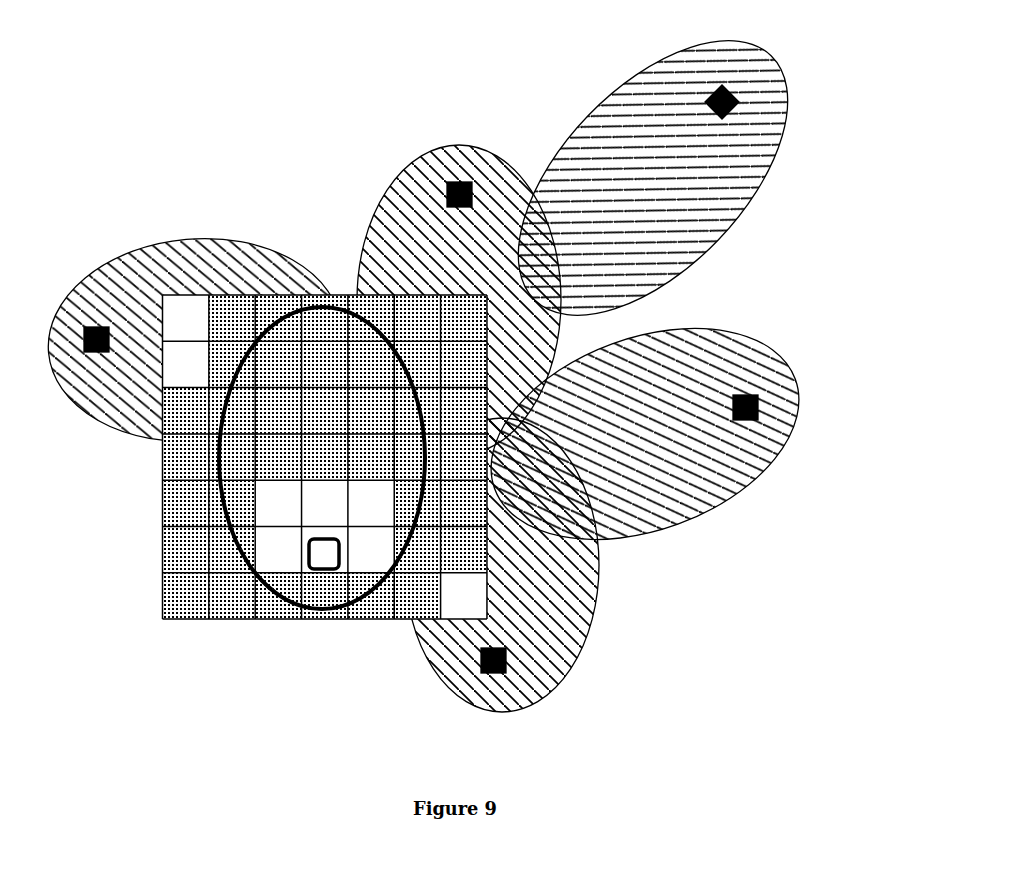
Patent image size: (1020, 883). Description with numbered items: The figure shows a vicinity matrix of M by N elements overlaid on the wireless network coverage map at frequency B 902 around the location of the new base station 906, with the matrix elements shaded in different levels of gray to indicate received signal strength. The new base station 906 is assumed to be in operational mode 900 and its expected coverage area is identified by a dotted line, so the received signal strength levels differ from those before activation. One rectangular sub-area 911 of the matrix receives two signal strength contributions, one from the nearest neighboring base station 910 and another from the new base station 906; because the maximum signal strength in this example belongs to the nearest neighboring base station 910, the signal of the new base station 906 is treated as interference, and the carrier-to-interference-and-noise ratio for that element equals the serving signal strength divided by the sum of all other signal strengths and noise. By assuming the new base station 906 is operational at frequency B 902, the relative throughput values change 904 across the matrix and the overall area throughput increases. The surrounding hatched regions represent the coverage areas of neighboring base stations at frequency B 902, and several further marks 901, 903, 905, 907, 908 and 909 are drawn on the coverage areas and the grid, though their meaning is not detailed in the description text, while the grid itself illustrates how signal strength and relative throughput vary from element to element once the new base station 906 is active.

The operational mode 900 is at (451, 373).
The base station 901 is at (733, 94).
The frequency B 902 is at (782, 146).
The neighboring cell 903 is at (321, 295).
The change of relative throughput values 904 is at (262, 472).
The dark shaded resource block 905 is at (190, 607).
The new base station (NBS) 906 is at (303, 588).
The light shaded resource block 907 is at (378, 607).
The shaded resource block 908 is at (415, 610).
The unshaded resource block 909 is at (458, 605).
The BS1 910 is at (99, 326).
The rectangular sub-area 911 is at (274, 360).